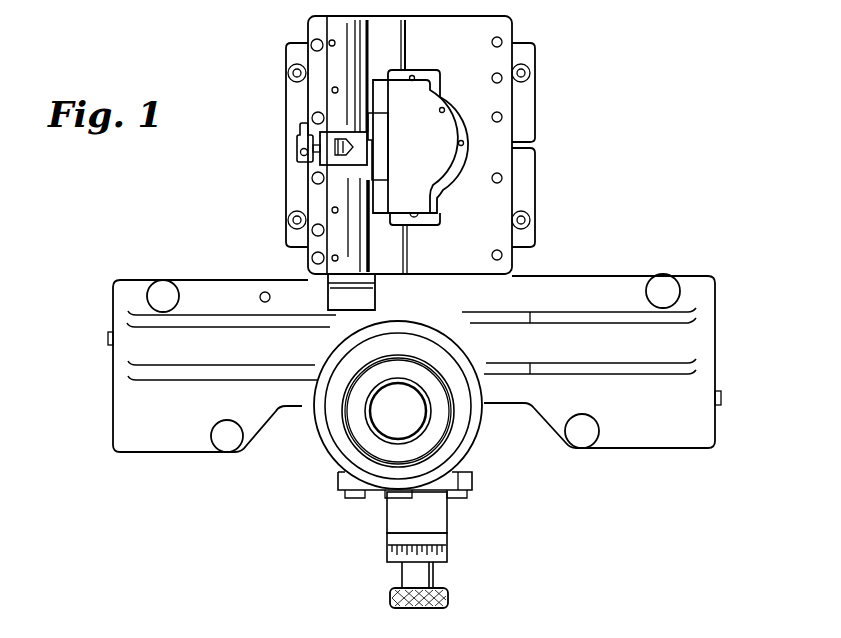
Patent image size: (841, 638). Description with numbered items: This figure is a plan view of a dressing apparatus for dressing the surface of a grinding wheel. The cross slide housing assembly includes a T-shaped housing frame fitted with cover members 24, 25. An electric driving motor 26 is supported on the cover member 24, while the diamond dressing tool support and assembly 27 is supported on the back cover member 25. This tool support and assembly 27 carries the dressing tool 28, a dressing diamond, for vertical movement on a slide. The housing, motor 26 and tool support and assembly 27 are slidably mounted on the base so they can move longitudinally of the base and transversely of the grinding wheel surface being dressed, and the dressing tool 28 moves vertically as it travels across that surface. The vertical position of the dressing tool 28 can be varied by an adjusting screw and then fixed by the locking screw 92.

The cover member 24 is at (653, 433).
The cover member 25 is at (497, 133).
The electric driving motor 26 is at (337, 467).
The diamond dressing tool support and assembly 27 is at (422, 196).
The dressing tool 28 is at (342, 148).
The locking screw 92 is at (298, 153).